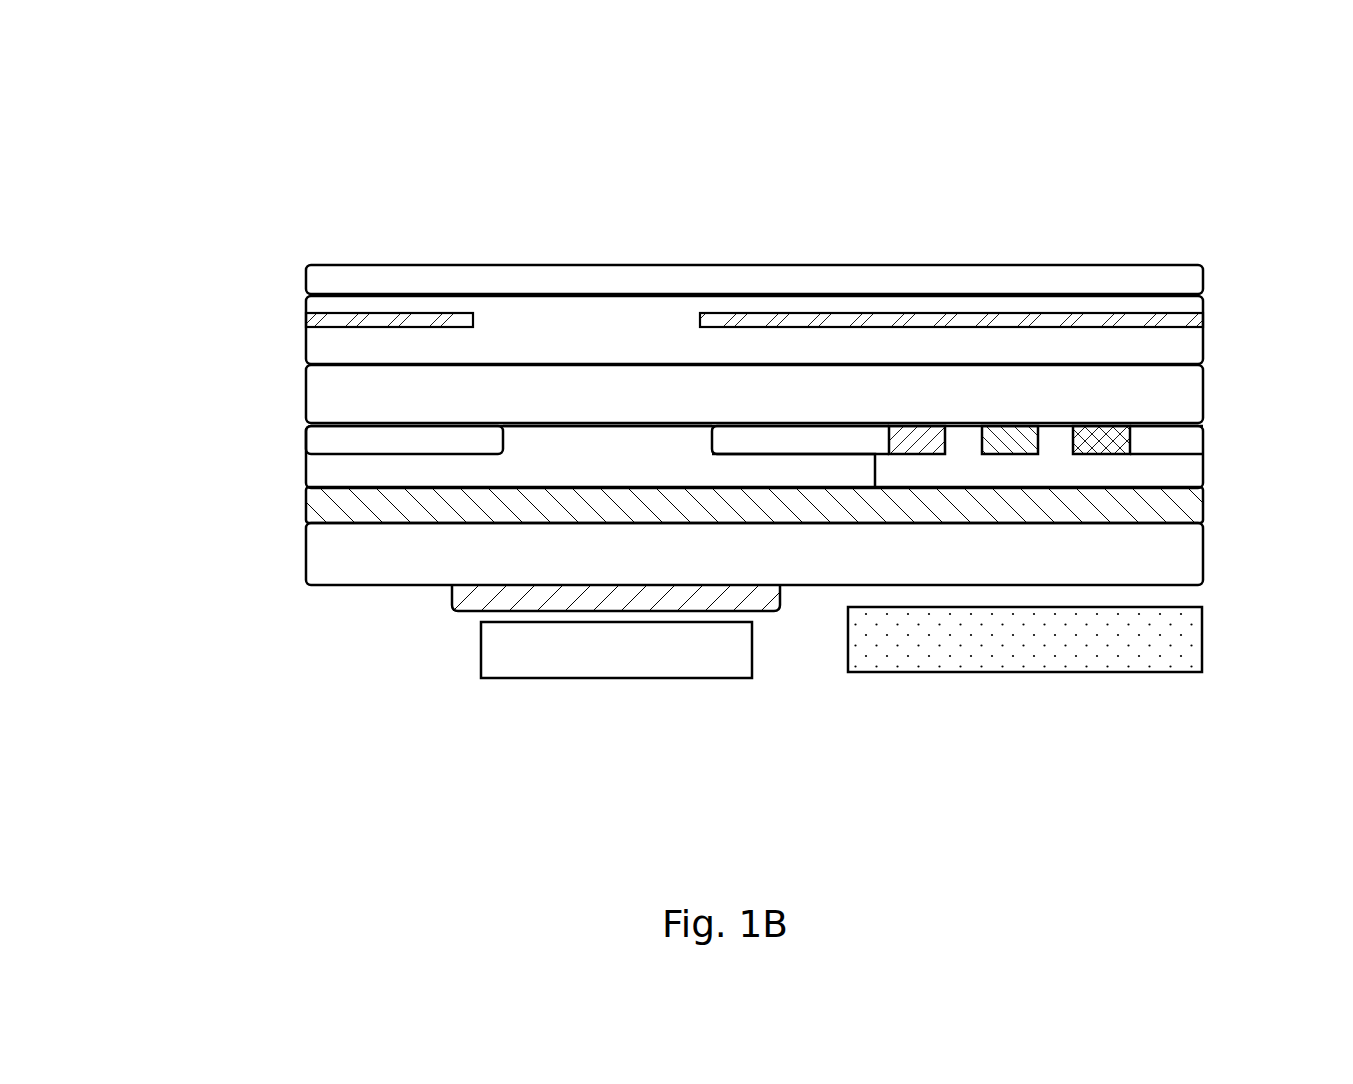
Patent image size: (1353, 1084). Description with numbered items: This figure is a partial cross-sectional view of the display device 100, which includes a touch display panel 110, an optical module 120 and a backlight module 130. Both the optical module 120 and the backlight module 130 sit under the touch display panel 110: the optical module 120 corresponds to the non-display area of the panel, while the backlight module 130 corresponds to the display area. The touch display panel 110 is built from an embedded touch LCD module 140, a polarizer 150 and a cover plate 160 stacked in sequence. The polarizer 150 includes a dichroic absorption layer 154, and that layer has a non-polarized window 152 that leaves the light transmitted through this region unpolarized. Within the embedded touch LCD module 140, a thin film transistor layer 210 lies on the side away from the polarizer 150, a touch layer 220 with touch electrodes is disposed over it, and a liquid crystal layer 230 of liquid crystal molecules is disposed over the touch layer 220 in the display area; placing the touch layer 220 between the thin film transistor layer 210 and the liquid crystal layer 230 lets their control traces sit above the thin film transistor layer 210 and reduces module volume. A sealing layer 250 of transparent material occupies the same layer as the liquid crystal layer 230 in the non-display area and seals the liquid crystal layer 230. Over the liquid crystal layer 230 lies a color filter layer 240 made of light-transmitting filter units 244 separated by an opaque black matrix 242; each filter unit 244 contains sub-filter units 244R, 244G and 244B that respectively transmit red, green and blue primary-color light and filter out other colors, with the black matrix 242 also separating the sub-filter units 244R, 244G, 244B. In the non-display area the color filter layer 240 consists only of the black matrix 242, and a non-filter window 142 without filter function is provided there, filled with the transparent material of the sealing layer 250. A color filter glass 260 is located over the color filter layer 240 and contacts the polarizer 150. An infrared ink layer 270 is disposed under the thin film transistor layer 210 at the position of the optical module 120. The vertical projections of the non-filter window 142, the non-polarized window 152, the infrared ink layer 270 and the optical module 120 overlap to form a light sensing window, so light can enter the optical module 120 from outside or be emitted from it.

The display device 100 is at (133, 77).
The touch display panel 110 is at (180, 585).
The optical module 120 is at (616, 660).
The backlight module 130 is at (1018, 655).
The embedded touch LCD module 140 is at (290, 365).
The non-filter window 142 is at (660, 445).
The polarizer 150 is at (290, 295).
The non-polarized window 152 is at (550, 308).
The dichroic absorption layer 154 is at (438, 318).
The cover plate 160 is at (310, 277).
The thin film transistor layer 210 is at (1192, 555).
The touch layer 220 is at (1192, 506).
The liquid crystal layer 230 is at (1192, 470).
The color filter layer 240 is at (1292, 133).
The black matrix 242 is at (378, 437).
The filter unit 244 is at (1187, 190).
The red sub-filter unit 244R is at (911, 447).
The green sub-filter unit 244G is at (1005, 447).
The blue sub-filter unit 244B is at (1095, 447).
The sealing layer 250 is at (785, 470).
The color filter glass 260 is at (1192, 393).
The infrared ink layer 270 is at (460, 595).